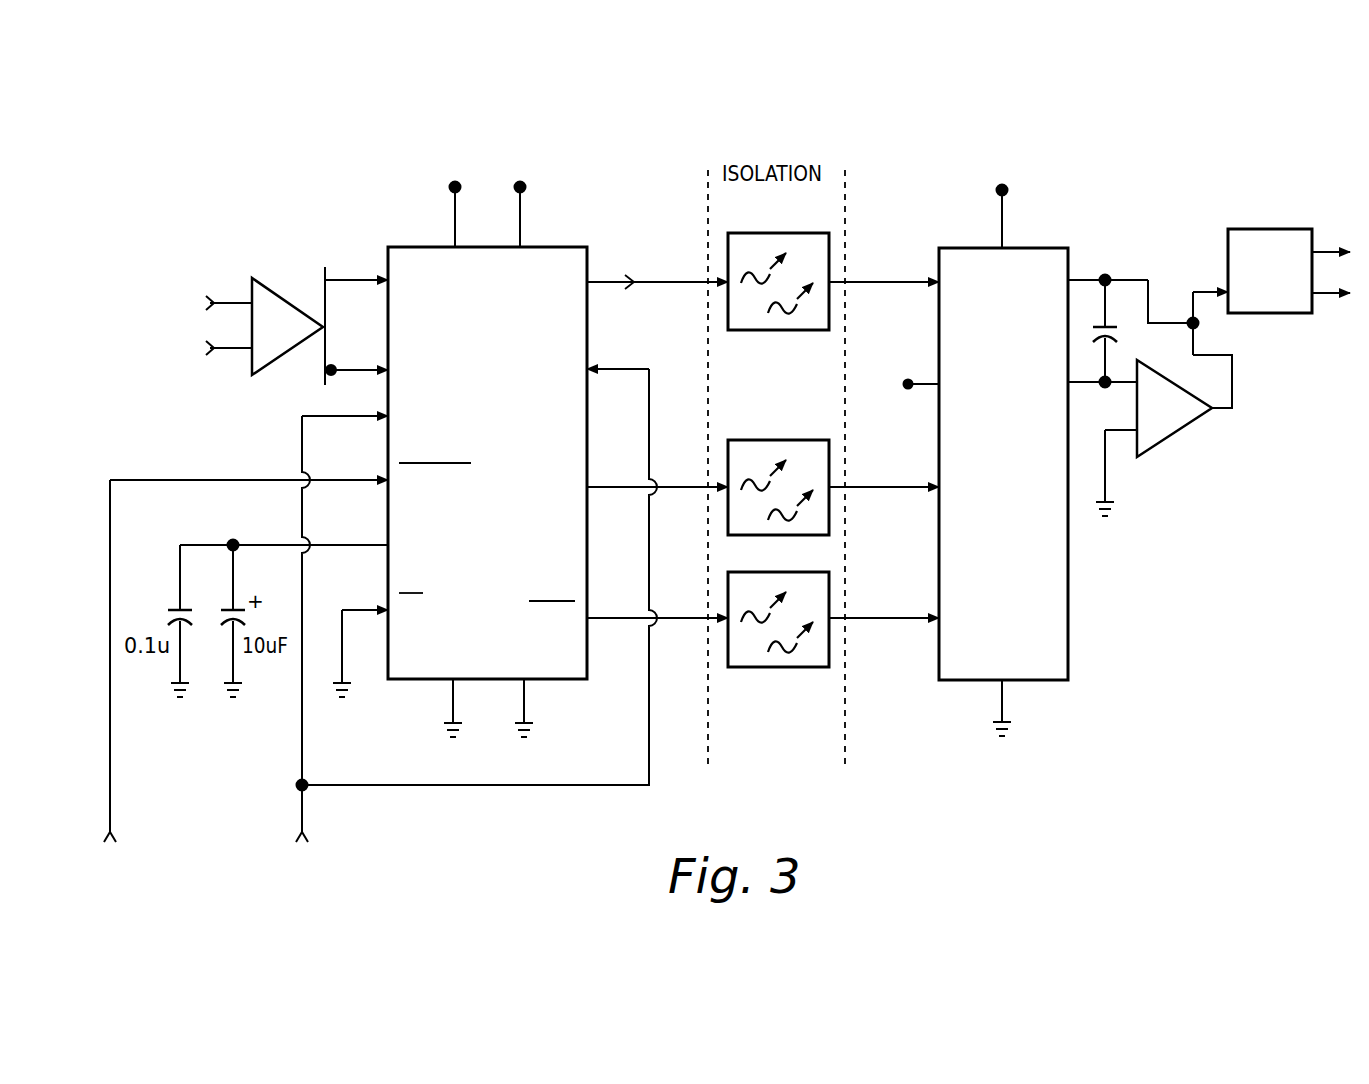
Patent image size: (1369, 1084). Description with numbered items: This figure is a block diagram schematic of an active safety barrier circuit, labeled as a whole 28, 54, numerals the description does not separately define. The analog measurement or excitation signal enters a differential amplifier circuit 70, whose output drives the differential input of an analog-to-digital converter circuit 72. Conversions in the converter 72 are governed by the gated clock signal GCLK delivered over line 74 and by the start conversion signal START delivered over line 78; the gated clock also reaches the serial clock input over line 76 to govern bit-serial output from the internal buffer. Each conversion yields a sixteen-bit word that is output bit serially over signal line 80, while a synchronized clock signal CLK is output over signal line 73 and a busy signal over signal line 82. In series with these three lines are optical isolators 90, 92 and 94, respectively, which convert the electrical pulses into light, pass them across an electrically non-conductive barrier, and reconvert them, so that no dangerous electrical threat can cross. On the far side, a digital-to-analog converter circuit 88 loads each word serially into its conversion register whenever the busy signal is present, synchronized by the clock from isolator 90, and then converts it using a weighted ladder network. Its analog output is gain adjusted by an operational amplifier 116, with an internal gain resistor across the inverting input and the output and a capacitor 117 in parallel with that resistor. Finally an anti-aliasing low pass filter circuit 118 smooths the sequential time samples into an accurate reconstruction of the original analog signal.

The differential amplifier circuit 70 is at (285, 278).
The analog-to-digital converter circuit 72 is at (550, 247).
The signal line 73 is at (670, 282).
The line 74 is at (302, 727).
The line 76 is at (515, 785).
The line 78 is at (172, 480).
The signal line 80 is at (620, 489).
The signal line 82 is at (675, 620).
The optical isolator 90 is at (778, 330).
The optical isolator 92 is at (780, 440).
The optical isolator 94 is at (776, 667).
The digital-to-analog converter circuit 88 is at (1045, 680).
The operational amplifier 116 is at (1170, 432).
The capacitor 117 is at (1110, 326).
The low pass filter circuit 118 is at (1270, 229).
The signal processing circuit 28 is at (1242, 125).
The output circuit 54 is at (1198, 153).